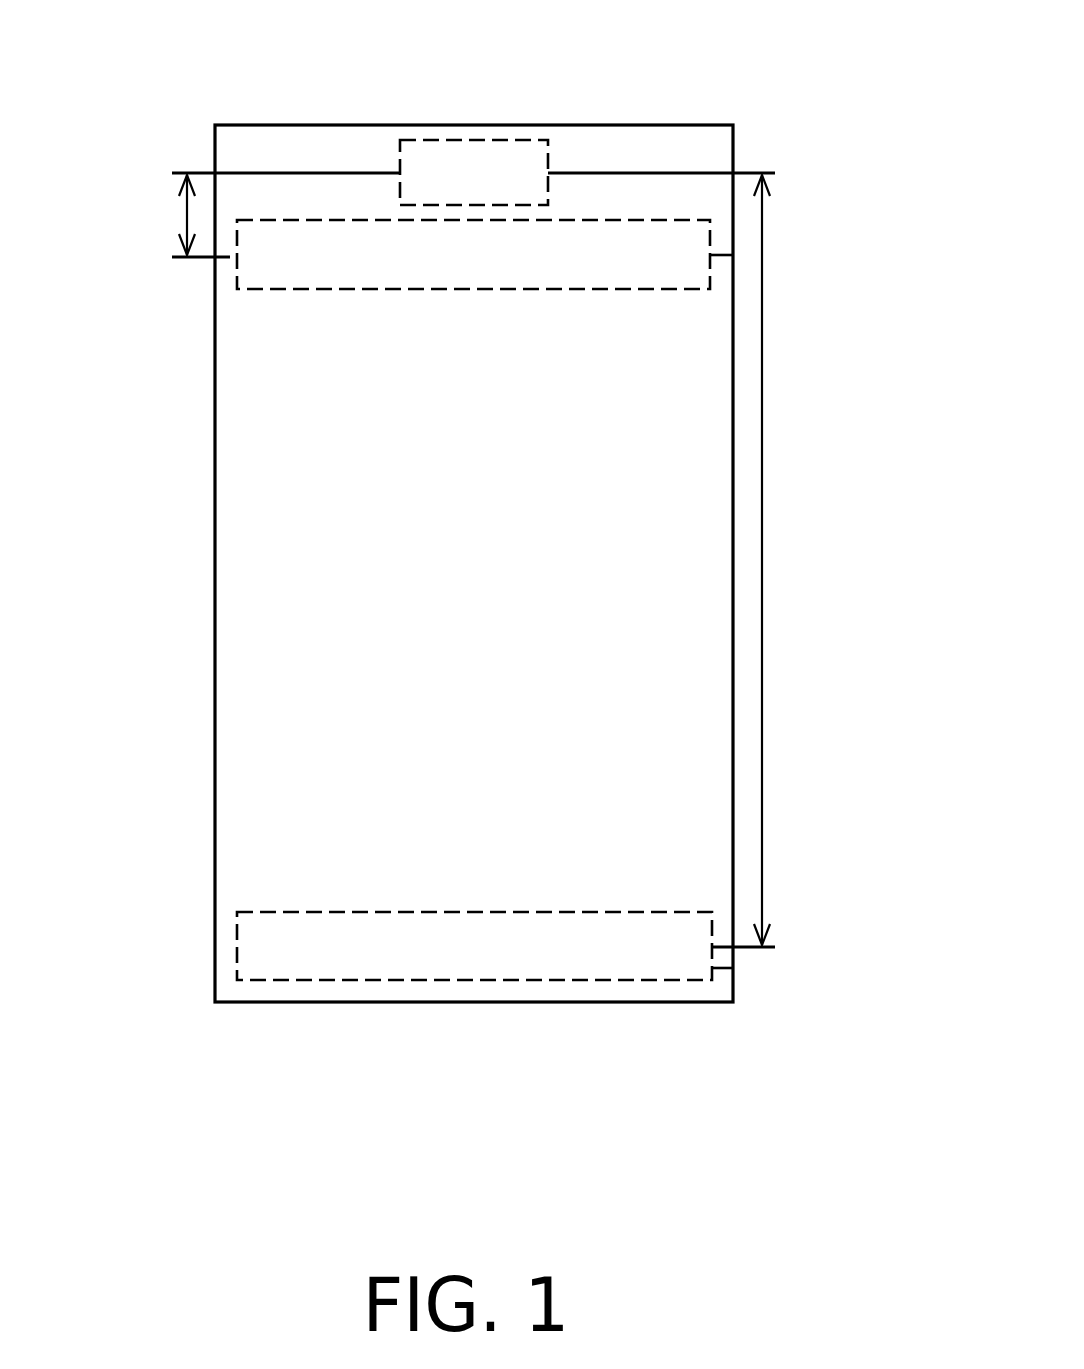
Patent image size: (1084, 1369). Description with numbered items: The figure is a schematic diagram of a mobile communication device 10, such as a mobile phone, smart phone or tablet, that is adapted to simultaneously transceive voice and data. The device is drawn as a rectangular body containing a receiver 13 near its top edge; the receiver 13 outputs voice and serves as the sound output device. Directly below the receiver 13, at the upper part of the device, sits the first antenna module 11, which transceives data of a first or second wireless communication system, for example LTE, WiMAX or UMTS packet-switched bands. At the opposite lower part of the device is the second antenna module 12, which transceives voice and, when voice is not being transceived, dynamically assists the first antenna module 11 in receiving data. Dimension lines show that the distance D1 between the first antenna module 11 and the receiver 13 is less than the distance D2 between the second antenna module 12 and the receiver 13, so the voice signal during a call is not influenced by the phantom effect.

The mobile communication device 10 is at (358, 125).
The first antenna module 11 is at (742, 253).
The second antenna module 12 is at (742, 969).
The receiver 13 is at (510, 140).
The distance between first antenna module and receiver D1 is at (264, 215).
The distance between second antenna module and receiver D2 is at (684, 560).